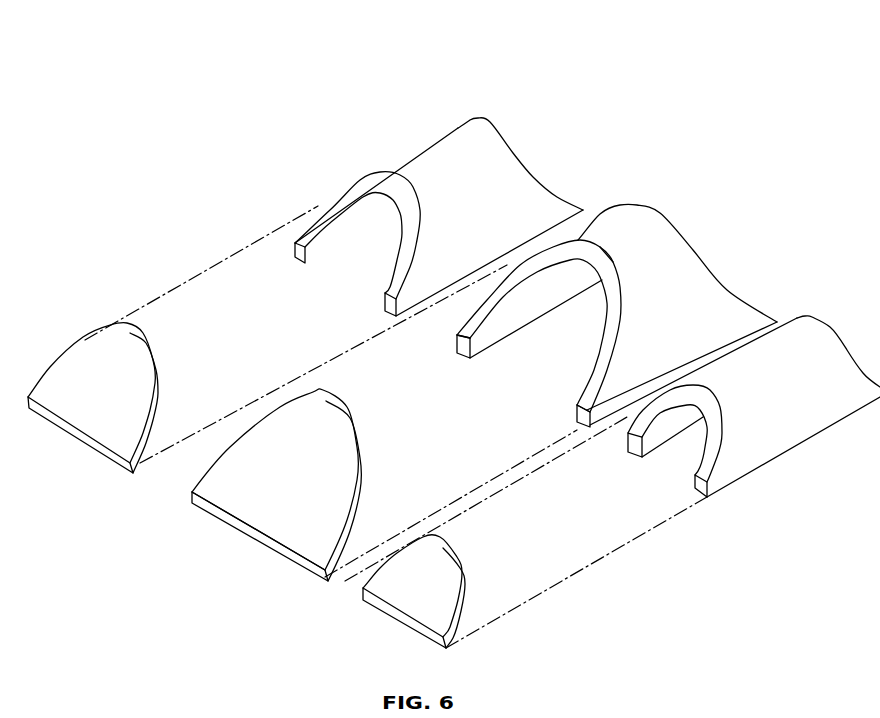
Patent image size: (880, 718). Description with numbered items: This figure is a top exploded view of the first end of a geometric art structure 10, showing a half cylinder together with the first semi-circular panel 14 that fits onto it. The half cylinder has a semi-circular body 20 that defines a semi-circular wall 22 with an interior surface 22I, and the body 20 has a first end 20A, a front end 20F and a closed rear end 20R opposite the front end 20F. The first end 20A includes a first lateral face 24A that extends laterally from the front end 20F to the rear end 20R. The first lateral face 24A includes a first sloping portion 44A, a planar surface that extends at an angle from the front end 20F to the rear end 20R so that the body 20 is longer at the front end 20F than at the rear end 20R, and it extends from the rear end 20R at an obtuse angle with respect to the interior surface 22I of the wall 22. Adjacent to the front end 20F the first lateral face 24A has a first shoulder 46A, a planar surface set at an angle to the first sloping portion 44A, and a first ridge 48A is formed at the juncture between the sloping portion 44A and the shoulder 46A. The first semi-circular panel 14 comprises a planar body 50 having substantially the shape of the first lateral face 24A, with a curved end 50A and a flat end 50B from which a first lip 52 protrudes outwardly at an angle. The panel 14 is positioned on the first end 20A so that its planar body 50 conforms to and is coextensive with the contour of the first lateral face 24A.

The organizer assembly 10 is at (226, 98).
The first semi-circular panel 14 is at (230, 574).
The semi-circular body 20 is at (482, 377).
The first end 20A is at (569, 321).
The front end 20F is at (511, 406).
The closed rear end 20R is at (672, 177).
The semi-circular wall 22 is at (583, 303).
The interior surface 22I is at (535, 319).
The first lateral face 24A is at (617, 343).
The first sloping portion 44A is at (607, 263).
The first shoulder 46A is at (456, 346).
The first ridge 48A is at (464, 335).
The planar body 50 is at (310, 516).
The curved end 50A is at (350, 410).
The flat end 50B is at (235, 515).
The first lip 52 is at (305, 565).